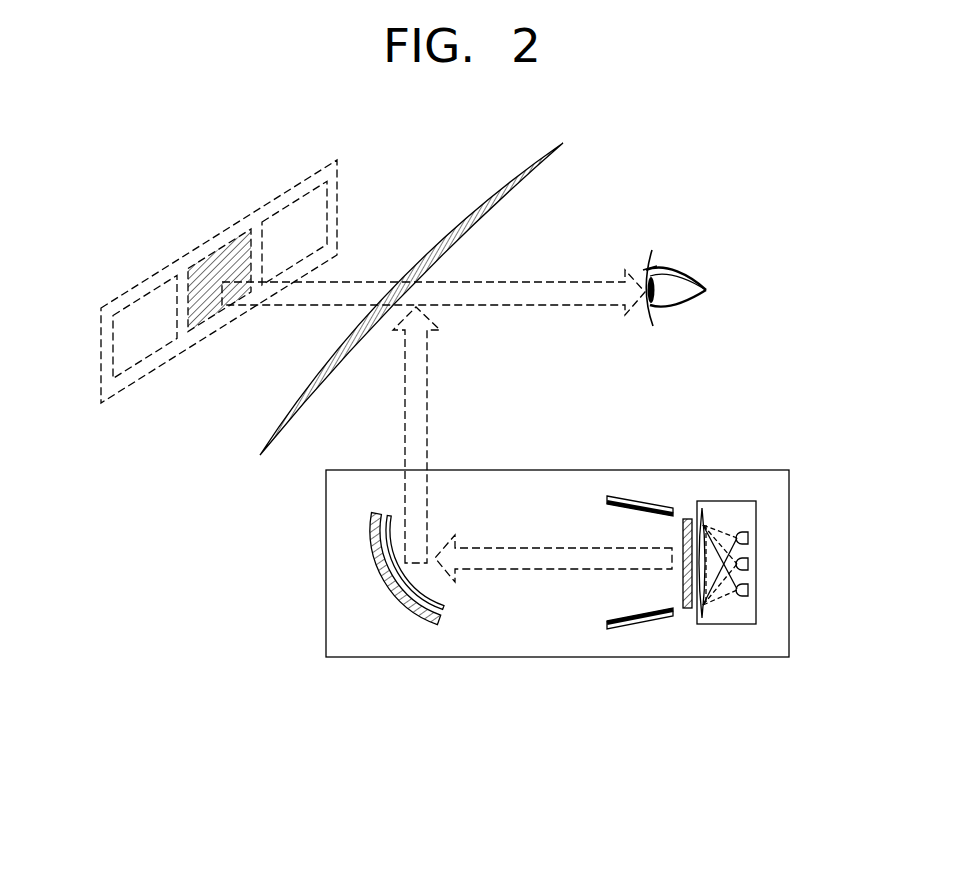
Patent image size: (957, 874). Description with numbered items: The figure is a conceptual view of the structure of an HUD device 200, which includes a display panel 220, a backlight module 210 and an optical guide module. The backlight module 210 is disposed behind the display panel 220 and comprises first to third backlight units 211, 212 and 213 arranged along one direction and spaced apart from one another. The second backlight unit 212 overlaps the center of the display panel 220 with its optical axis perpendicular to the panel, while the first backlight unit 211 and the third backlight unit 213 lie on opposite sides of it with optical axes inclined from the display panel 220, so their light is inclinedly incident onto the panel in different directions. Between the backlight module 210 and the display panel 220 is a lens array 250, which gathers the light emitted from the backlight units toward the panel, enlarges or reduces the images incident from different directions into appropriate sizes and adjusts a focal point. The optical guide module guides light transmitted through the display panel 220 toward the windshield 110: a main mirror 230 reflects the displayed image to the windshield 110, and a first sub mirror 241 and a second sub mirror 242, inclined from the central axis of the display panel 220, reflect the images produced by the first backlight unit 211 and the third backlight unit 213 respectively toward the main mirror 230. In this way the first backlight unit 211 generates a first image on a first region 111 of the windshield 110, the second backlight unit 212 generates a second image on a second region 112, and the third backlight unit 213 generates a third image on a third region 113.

The windshield 110 is at (470, 215).
The first region 111 is at (286, 215).
The second region 112 is at (210, 257).
The third region 113 is at (137, 308).
The HUD device 200 is at (521, 683).
The backlight module 210 is at (725, 626).
The first backlight unit 211 is at (748, 590).
The second backlight unit 212 is at (748, 564).
The third backlight unit 213 is at (748, 538).
The display panel 220 is at (688, 519).
The main mirror 230 is at (373, 559).
The first sub mirror 241 is at (622, 497).
The second sub mirror 242 is at (622, 630).
The lens array 250 is at (710, 500).